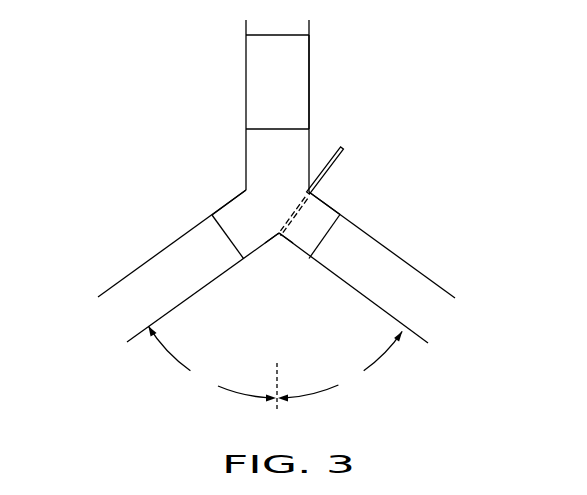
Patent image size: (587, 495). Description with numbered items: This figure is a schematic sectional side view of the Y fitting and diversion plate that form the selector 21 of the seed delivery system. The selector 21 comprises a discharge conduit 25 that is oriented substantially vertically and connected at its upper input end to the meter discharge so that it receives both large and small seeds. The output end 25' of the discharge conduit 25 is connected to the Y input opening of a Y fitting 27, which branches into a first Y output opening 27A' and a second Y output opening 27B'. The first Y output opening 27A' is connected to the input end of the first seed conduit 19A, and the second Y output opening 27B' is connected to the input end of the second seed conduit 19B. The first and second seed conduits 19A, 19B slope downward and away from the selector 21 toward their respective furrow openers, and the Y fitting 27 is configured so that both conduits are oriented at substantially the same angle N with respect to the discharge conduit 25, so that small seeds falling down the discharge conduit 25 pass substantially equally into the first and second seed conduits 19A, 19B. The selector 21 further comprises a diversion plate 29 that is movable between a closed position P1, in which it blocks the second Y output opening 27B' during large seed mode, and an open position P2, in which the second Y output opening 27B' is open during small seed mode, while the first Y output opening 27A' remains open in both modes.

The first seed conduit 19A is at (127, 275).
The second seed conduit 19B is at (430, 270).
The selector 21 is at (275, 262).
The discharge conduit 25 is at (243, 74).
The output end of the discharge conduit 25' is at (350, 113).
The Y fitting 27 is at (244, 188).
The first Y output opening 27A' is at (218, 275).
The second Y output opening 27B' is at (334, 275).
The diversion plate 29 is at (343, 150).
The closed position P1 is at (303, 210).
The open position P2 is at (328, 173).
The angle N is at (275, 368).